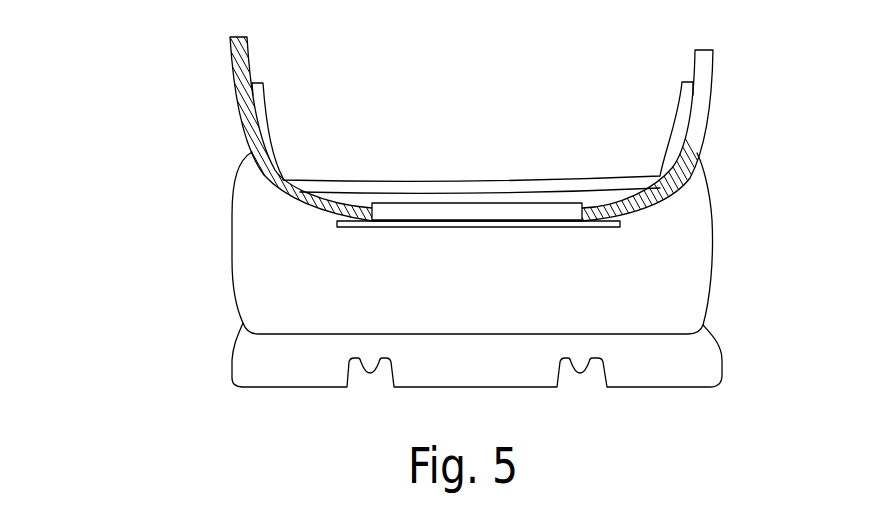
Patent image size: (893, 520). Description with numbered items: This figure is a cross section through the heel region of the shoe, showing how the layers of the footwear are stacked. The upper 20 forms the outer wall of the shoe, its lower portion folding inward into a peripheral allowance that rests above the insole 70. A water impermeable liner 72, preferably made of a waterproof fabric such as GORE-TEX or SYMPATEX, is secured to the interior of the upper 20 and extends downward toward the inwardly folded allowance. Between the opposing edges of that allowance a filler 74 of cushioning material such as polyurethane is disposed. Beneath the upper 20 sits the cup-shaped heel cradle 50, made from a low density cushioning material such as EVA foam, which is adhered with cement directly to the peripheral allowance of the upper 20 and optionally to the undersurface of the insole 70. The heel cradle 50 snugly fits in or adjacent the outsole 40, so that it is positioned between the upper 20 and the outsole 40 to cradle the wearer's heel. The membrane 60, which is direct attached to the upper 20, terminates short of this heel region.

The upper 20 is at (228, 55).
The outsole 40 is at (233, 356).
The heel cradle 50 is at (672, 272).
The membrane 60 is at (412, 227).
The insole 70 is at (463, 200).
The water impermeable liner 72 is at (262, 102).
The filler 74 is at (397, 215).